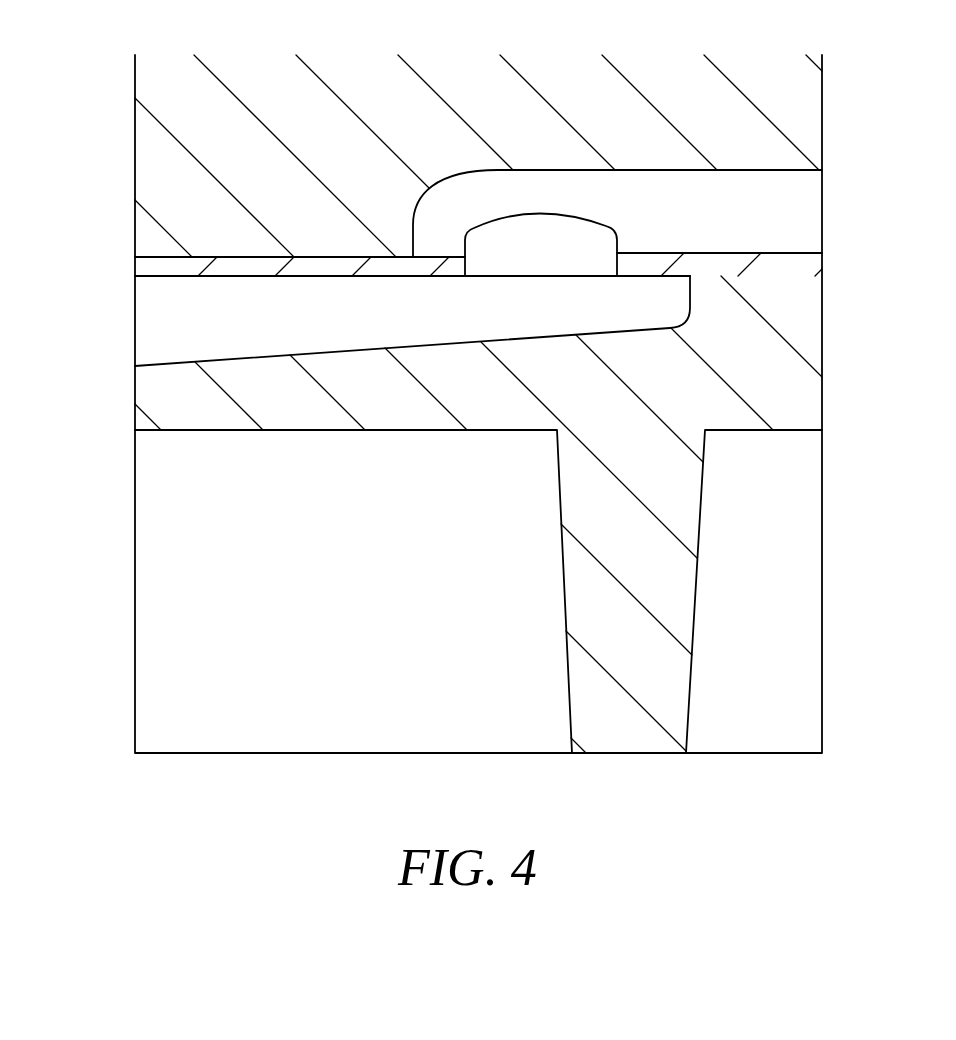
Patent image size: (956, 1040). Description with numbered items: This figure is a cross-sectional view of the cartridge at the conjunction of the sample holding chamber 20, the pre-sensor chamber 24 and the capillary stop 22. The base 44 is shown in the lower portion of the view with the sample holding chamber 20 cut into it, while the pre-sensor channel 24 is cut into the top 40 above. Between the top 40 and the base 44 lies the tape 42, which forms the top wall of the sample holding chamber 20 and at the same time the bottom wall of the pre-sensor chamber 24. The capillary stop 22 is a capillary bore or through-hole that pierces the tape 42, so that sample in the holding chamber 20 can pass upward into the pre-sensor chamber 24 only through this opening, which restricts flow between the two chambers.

The sample holding chamber 20 is at (167, 332).
The capillary stop 22 is at (530, 232).
The pre-sensor chamber 24 is at (678, 203).
The top 40 is at (160, 173).
The tape 42 is at (155, 265).
The base 44 is at (167, 407).